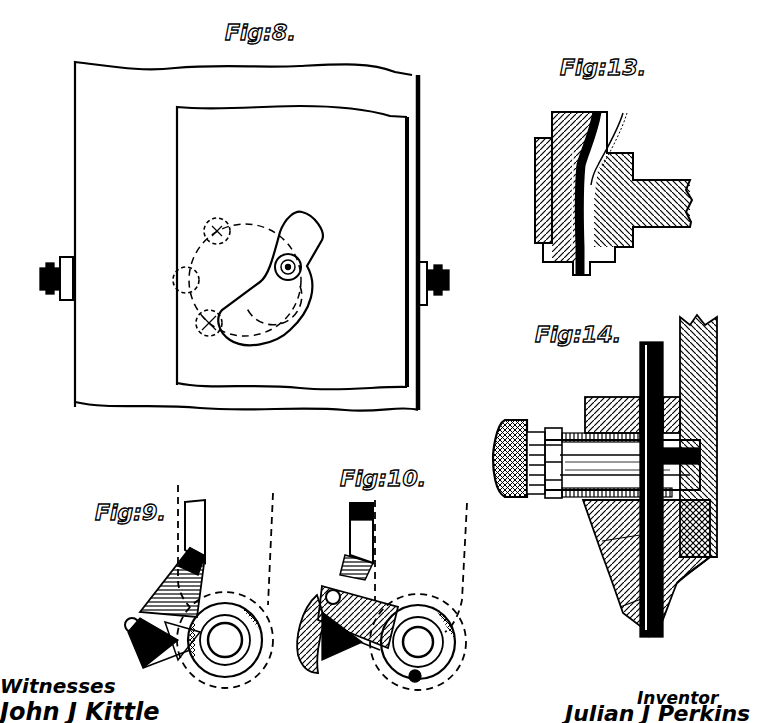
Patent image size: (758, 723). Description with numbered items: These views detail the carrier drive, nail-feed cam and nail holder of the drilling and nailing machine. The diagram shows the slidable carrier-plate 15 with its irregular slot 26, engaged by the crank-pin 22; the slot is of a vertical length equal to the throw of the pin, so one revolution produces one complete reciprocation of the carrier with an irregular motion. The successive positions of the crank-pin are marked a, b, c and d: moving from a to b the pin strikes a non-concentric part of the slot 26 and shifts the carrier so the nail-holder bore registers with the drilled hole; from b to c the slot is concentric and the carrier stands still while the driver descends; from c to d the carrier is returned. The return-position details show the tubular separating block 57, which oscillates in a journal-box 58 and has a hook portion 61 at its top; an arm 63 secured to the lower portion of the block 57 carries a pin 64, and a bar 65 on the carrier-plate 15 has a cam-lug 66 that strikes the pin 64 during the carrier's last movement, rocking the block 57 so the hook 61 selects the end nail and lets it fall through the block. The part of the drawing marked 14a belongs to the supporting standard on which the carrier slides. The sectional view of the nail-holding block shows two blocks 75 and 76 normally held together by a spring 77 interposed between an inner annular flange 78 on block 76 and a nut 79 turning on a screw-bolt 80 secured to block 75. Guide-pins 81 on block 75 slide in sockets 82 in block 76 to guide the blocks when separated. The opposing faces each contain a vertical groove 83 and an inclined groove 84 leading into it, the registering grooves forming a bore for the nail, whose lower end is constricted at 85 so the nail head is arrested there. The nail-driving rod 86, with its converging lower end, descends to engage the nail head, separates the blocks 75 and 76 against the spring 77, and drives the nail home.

In FIG. 8, the outer plate 14a is at (396, 88).
In FIG. 8, the carrier-plate 15 is at (405, 152).
In FIG. 8, the crank-pin 22 is at (288, 255).
In FIG. 8, the irregular slot 26 is at (310, 224).
In FIG. 8, the crank-pin position a is at (217, 219).
In FIG. 8, the crank-pin position b is at (302, 267).
In FIG. 8, the crank-pin position c is at (207, 337).
In FIG. 8, the crank-pin position d is at (172, 280).
In FIG. 13, the tubular separating block 57 is at (585, 108).
In FIG. 9, the tubular separating block 57 is at (233, 672).
In FIG. 10, the tubular separating block 57 is at (458, 668).
In FIG. 13, the journal-box 58 is at (536, 200).
In FIG. 13, the hook portion 61 is at (620, 118).
In FIG. 9, the arm 63 is at (175, 660).
In FIG. 10, the arm 63 is at (365, 656).
In FIG. 9, the pin 64 is at (135, 615).
In FIG. 10, the pin 64 is at (326, 590).
In FIG. 9, the bar 65 is at (205, 535).
In FIG. 10, the bar 65 is at (350, 530).
In FIG. 9, the cam-lug 66 is at (140, 666).
In FIG. 10, the cam-lug 66 is at (320, 672).
In FIG. 14, the block 75 is at (710, 518).
In FIG. 14, the block 76 is at (614, 571).
In FIG. 14, the spring 77 is at (578, 500).
In FIG. 14, the inner annular flange 78 is at (628, 397).
In FIG. 14, the nut 79 is at (556, 433).
In FIG. 14, the screw-bolt 80 is at (613, 445).
In FIG. 14, the guide-pins 81 is at (684, 398).
In FIG. 14, the sockets 82 is at (588, 548).
In FIG. 14, the groove 83 is at (620, 607).
In FIG. 14, the inclined groove 84 is at (692, 554).
In FIG. 14, the constricted portion 85 is at (646, 634).
In FIG. 14, the rod 86 is at (654, 342).